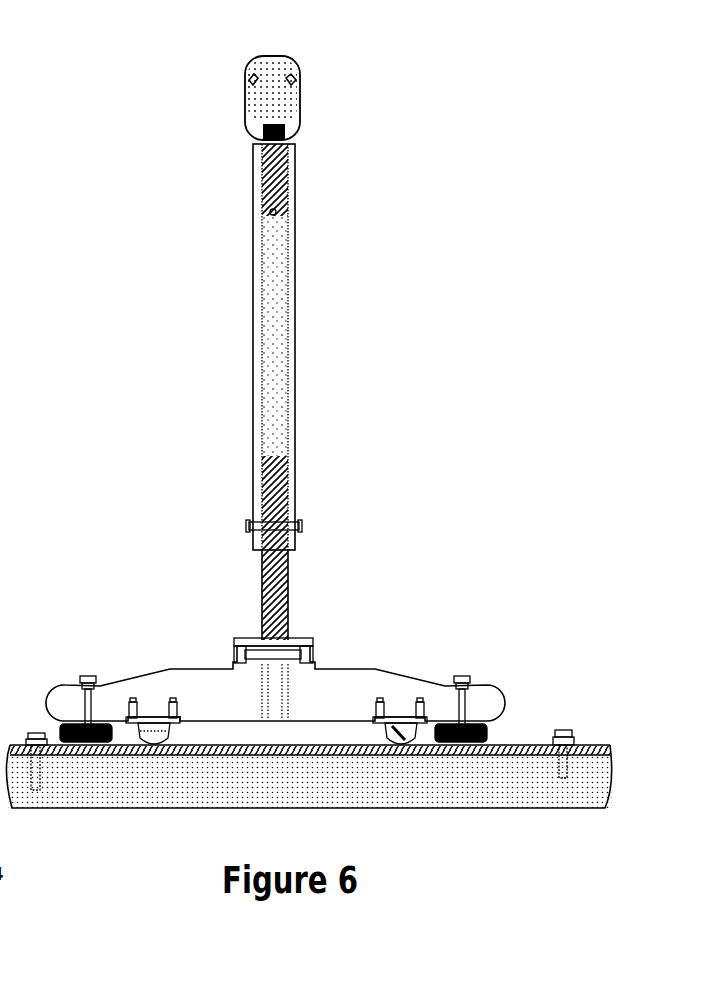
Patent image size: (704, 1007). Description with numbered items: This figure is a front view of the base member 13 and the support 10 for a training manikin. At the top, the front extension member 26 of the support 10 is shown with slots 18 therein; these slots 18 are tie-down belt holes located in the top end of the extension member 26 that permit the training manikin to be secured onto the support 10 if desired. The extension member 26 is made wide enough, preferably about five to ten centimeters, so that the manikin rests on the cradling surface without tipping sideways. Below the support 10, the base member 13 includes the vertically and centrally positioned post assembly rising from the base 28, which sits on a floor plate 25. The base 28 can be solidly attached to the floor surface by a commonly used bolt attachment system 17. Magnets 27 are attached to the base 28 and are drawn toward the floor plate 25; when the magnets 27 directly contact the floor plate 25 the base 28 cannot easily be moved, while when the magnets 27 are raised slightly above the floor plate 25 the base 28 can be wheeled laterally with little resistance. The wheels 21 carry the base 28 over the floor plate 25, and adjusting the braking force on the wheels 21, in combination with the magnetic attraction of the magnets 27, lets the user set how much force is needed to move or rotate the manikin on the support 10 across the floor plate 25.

The support 10 is at (262, 118).
The base member 13 is at (333, 298).
The bolt attachment system 17 is at (463, 680).
The slots 18 is at (250, 90).
The wheel 21 is at (155, 745).
The floor plate 25 is at (520, 752).
The extension member 26 is at (278, 86).
The magnets 27 is at (100, 742).
The base 28 is at (335, 680).